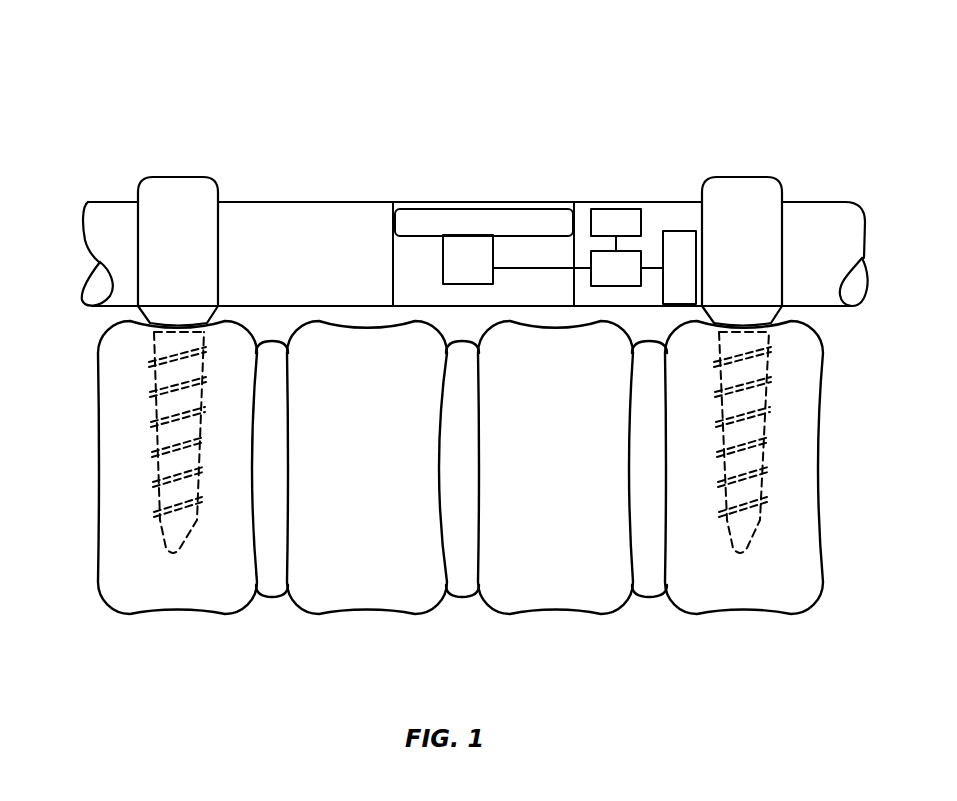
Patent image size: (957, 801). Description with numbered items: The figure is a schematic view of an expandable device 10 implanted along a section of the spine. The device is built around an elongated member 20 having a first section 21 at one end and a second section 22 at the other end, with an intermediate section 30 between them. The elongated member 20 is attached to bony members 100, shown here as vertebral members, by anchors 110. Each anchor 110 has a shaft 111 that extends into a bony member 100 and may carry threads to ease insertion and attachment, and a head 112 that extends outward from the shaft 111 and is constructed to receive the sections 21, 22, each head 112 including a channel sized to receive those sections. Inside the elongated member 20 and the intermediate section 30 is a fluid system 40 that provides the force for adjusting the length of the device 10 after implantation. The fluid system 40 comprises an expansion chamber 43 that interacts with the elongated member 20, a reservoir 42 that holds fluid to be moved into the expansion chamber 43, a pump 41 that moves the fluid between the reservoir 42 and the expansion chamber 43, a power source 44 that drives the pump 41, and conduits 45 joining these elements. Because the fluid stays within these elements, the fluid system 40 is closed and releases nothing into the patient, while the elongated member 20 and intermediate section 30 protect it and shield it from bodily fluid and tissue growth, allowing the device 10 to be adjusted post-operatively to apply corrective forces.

The expandable device 10 is at (325, 95).
The elongated member 20 is at (298, 165).
The first section 21 is at (122, 245).
The second section 22 is at (800, 263).
The intermediate section 30 is at (448, 209).
The fluid system 40 is at (612, 190).
The pump 41 is at (605, 276).
The reservoir 42 is at (668, 271).
The expansion chamber 43 is at (457, 269).
The power source 44 is at (605, 232).
The conduit 45 is at (541, 268).
The bony members 100 is at (565, 575).
The anchor 110 is at (750, 177).
The shaft 111 is at (178, 407).
The head 112 is at (180, 205).